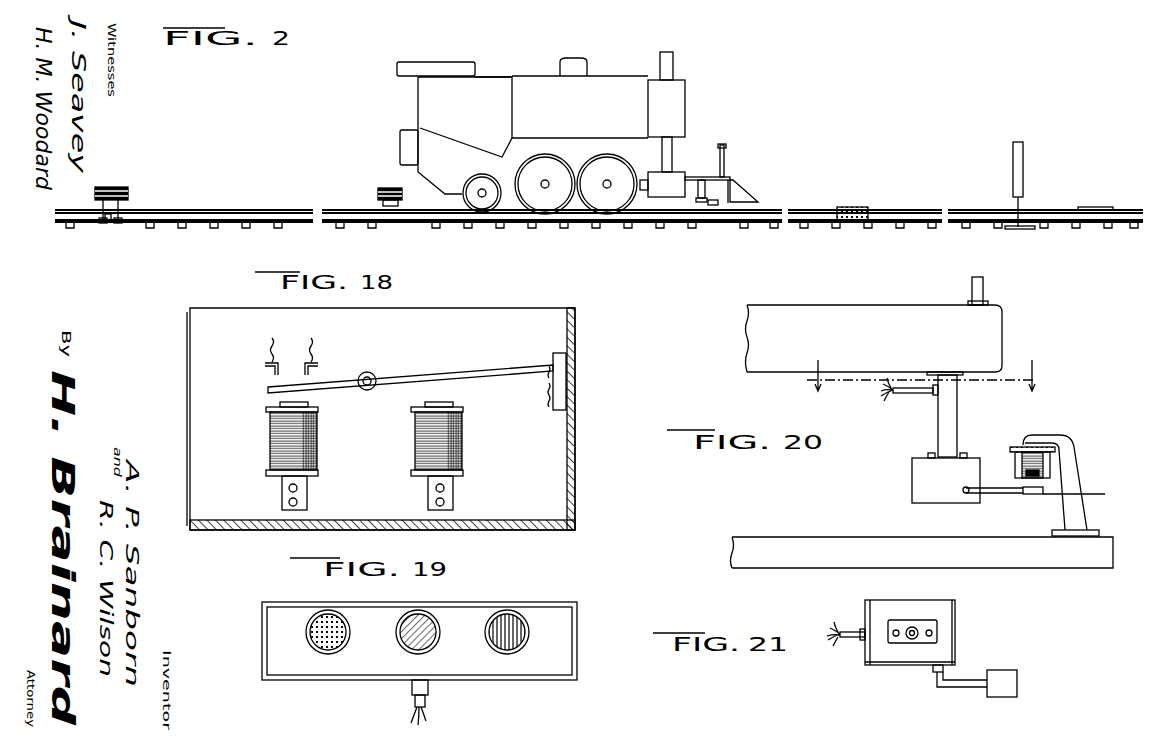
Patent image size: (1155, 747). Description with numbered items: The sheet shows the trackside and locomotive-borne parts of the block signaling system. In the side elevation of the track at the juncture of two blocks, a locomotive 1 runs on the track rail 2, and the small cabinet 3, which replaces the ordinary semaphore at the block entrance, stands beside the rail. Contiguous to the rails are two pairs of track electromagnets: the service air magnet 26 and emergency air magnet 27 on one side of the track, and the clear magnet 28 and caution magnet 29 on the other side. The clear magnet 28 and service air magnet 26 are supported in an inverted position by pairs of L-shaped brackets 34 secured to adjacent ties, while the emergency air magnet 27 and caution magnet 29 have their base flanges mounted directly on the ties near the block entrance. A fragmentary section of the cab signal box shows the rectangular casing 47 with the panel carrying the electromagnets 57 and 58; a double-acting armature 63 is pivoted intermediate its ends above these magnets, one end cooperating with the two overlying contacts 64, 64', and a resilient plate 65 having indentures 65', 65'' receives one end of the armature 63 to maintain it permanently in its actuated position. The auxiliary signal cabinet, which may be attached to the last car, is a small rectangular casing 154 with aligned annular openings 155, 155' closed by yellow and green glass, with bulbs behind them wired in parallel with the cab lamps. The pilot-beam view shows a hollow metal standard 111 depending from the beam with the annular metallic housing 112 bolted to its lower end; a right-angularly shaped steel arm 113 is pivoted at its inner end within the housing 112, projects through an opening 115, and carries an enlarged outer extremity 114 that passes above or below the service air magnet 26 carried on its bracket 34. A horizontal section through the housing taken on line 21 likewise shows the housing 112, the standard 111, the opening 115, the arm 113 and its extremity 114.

In FIG. 2, the locomotive 1 is at (538, 62).
In FIG. 2, the track rail 2 is at (206, 212).
In FIG. 2, the cabinet 3 is at (1022, 142).
In FIG. 2, the service air magnet 26 is at (110, 190).
In FIG. 20, the service air magnet 26 is at (1012, 465).
In FIG. 2, the emergency air magnet 27 is at (850, 208).
In FIG. 2, the clear magnet 28 is at (383, 190).
In FIG. 2, the caution magnet 29 is at (1086, 207).
In FIG. 2, the L-shaped brackets 34 is at (108, 212).
In FIG. 20, the L-shaped brackets 34 is at (1068, 472).
In FIG. 18, the casing 47 is at (556, 345).
In FIG. 18, the electromagnet 57 is at (280, 445).
In FIG. 18, the electromagnet 58 is at (422, 442).
In FIG. 18, the double-acting armature 63 is at (416, 379).
In FIG. 18, the contact 64 is at (253, 360).
In FIG. 18, the contact 64' is at (335, 356).
In FIG. 18, the resilient plate 65 is at (523, 396).
In FIG. 18, the indenture 65' is at (535, 372).
In FIG. 18, the indenture 65'' is at (545, 416).
In FIG. 2, the hollow metal standard 111 is at (700, 202).
In FIG. 20, the hollow metal standard 111 is at (943, 410).
In FIG. 21, the hollow metal standard 111 is at (910, 640).
In FIG. 20, the annular metallic housing 112 is at (920, 484).
In FIG. 21, the annular metallic housing 112 is at (880, 655).
In FIG. 20, the steel arm 113 is at (1005, 497).
In FIG. 21, the steel arm 113 is at (972, 688).
In FIG. 2, the enlarged outer extremity 114 is at (713, 206).
In FIG. 20, the enlarged outer extremity 114 is at (1090, 494).
In FIG. 21, the enlarged outer extremity 114 is at (1005, 687).
In FIG. 20, the opening 115 is at (965, 494).
In FIG. 21, the opening 115 is at (932, 677).
In FIG. 19, the casing 154 is at (280, 663).
In FIG. 19, the annular opening 155 is at (424, 610).
In FIG. 19, the annular opening 155' is at (453, 614).
In FIG. 20, the section line 21 is at (920, 378).